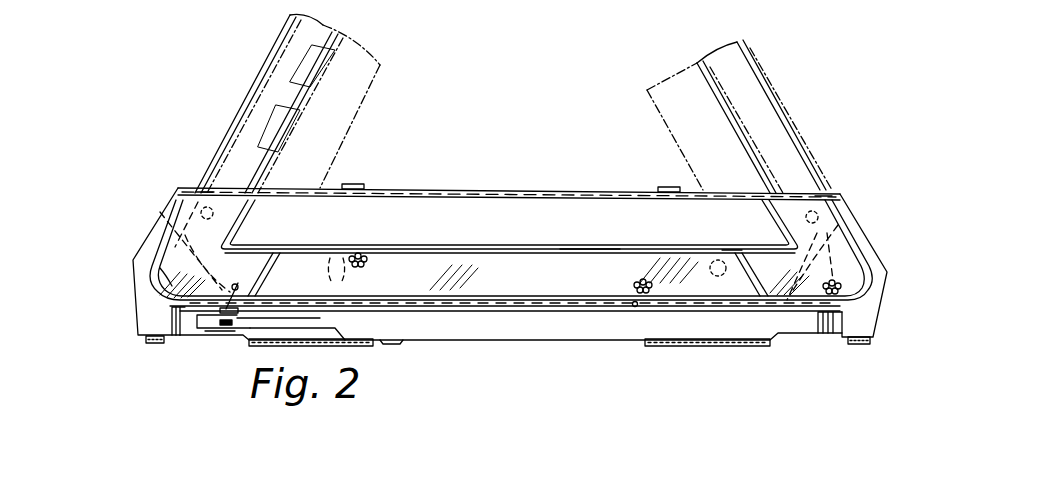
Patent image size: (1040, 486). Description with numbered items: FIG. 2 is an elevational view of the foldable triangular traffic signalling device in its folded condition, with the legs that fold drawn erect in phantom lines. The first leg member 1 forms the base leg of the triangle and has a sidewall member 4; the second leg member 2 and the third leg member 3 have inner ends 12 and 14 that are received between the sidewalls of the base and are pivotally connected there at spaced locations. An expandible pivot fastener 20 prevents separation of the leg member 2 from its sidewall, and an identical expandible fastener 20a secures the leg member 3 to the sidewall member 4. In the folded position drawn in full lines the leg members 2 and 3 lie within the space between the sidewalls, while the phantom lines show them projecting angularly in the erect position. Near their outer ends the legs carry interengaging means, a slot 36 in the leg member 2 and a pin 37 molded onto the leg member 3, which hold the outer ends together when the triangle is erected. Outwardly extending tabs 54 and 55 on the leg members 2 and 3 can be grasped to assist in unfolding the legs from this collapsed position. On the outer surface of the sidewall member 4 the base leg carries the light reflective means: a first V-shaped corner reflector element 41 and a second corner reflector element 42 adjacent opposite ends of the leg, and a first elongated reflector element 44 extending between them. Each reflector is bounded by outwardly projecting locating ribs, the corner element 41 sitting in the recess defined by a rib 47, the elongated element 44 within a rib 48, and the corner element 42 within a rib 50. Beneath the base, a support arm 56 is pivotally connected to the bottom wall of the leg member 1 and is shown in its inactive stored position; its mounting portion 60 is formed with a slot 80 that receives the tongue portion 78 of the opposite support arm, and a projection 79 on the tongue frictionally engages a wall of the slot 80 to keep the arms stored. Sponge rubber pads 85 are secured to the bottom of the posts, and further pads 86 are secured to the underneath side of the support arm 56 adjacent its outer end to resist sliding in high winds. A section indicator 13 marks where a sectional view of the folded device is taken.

The first leg member 1 is at (508, 186).
The second leg member 2 is at (782, 92).
The third leg member 3 is at (255, 60).
The sidewall member 4 is at (550, 222).
The inner end 12 is at (170, 230).
The section line 13 is at (500, 162).
The inner end 14 is at (870, 290).
The expandible pivot fastener 20 is at (827, 193).
The expandible fastener 20a is at (203, 188).
The slot 36 is at (335, 262).
The pin 37 is at (733, 252).
The corner reflector element 41 is at (165, 268).
The corner reflector element 42 is at (840, 274).
The elongated reflector element 44 is at (586, 276).
The rib 47 is at (232, 227).
The rib 48 is at (506, 298).
The rib 50 is at (845, 242).
The tab 54 is at (668, 187).
The tab 55 is at (356, 184).
The support arm 56 is at (710, 326).
The mounting portion 60 is at (216, 333).
The tongue portion 78 is at (233, 284).
The projection 79 is at (227, 328).
The slot 80 is at (201, 318).
The pad 85 is at (150, 345).
The pad 86 is at (368, 340).